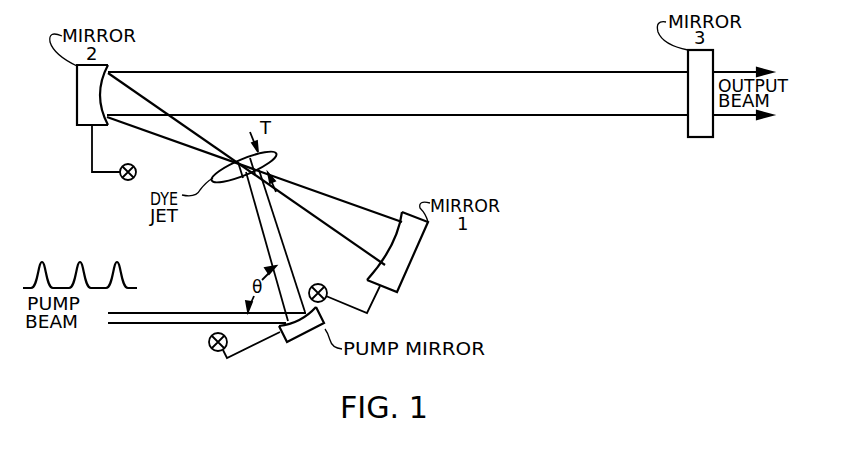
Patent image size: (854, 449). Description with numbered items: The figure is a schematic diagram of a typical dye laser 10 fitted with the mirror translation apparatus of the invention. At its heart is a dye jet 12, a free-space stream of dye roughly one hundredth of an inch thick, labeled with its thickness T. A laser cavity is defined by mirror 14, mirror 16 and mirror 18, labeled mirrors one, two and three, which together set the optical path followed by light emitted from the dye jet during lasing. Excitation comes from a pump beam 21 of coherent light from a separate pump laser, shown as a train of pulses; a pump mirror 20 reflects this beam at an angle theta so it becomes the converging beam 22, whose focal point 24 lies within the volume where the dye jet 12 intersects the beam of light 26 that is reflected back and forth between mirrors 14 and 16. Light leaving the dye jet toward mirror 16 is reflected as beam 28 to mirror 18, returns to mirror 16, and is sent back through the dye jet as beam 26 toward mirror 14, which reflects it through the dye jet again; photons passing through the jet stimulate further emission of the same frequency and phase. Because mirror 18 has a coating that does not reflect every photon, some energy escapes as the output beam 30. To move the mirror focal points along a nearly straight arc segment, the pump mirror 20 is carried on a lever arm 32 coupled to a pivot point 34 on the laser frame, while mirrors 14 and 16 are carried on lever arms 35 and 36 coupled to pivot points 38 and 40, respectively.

The dye laser 10 is at (485, 28).
The dye jet 12 is at (229, 185).
The mirror 1 14 is at (404, 264).
The mirror 2 16 is at (83, 110).
The mirror 3 18 is at (703, 65).
The pump mirror 20 is at (302, 344).
The pump beam 21 is at (133, 323).
The converging beam 22 is at (268, 256).
The focal point 24 is at (263, 167).
The beam of light 26 is at (156, 128).
The beam 28 is at (298, 72).
The output beam 30 is at (735, 108).
The lever arm 32 is at (247, 358).
The pivot point 34 is at (209, 343).
The lever arm 35 is at (370, 310).
The lever arm 36 is at (97, 175).
The pivot point 38 is at (324, 284).
The pivot point 40 is at (135, 165).